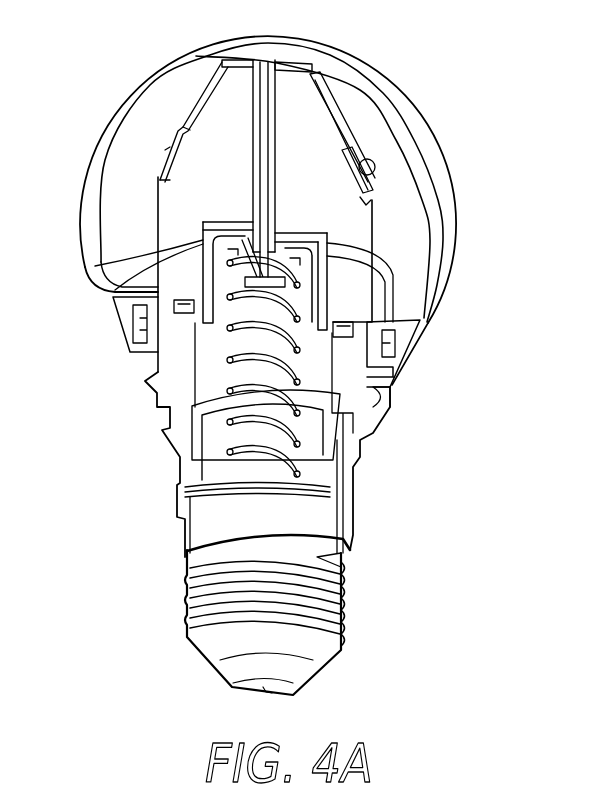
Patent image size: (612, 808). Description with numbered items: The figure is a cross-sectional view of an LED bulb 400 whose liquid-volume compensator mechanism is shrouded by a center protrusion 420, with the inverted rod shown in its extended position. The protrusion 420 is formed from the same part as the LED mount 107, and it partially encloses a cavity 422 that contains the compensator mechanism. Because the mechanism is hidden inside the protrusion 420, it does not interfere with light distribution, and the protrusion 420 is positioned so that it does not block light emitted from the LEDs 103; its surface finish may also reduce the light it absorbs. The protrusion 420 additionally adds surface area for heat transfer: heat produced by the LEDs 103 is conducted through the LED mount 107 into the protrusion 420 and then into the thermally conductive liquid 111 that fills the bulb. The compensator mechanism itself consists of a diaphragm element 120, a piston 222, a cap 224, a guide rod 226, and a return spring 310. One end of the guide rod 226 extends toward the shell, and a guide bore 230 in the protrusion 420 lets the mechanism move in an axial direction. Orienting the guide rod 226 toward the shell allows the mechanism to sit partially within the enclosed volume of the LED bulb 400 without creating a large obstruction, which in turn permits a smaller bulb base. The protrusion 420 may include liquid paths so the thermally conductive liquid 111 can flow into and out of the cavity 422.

The LED bulb 400 is at (499, 61).
The thermally conductive liquid 111 is at (123, 142).
The center protrusion 420 is at (322, 198).
The guide rod 226 is at (265, 90).
The guide bore 230 is at (298, 45).
The LED mount 107 is at (312, 80).
The LEDs 103 is at (363, 180).
The diaphragm element 120 is at (203, 247).
The cavity 422 is at (310, 373).
The piston 222 is at (240, 270).
The cap 224 is at (320, 233).
The return spring 310 is at (230, 356).